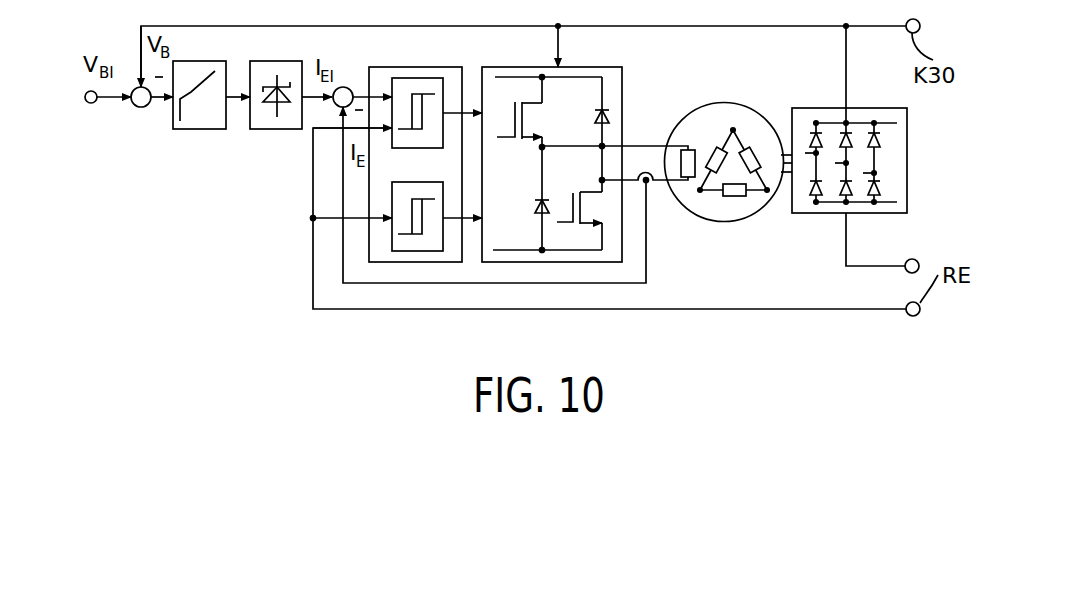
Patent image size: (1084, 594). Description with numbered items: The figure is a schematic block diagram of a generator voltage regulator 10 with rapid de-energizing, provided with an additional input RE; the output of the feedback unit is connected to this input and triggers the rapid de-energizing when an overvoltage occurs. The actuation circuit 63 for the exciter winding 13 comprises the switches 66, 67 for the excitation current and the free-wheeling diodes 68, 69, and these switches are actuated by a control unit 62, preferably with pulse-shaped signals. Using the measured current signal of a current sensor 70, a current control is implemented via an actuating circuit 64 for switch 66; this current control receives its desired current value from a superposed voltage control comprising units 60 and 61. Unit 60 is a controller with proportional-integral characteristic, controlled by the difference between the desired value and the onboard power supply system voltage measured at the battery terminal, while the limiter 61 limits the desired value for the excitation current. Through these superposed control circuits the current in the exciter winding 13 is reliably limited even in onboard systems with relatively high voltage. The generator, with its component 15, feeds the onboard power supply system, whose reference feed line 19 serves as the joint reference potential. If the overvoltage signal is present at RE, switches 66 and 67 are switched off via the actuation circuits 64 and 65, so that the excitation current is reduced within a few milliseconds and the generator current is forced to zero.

The generator controller 10 is at (350, 87).
The exciter winding 13 is at (683, 133).
The generator component 15 is at (855, 127).
The reference feed line 19 is at (916, 261).
The PI controller 60 is at (193, 121).
The limiter 61 is at (265, 122).
The control unit 62 is at (407, 265).
The actuation circuit 63 is at (512, 262).
The actuating circuit 64 is at (420, 85).
The actuation circuit 65 is at (408, 251).
The switch 66 is at (514, 120).
The switch 67 is at (577, 221).
The free-wheeling diode 68 is at (583, 117).
The free-wheeling diode 69 is at (520, 221).
The current sensor 70 is at (648, 183).